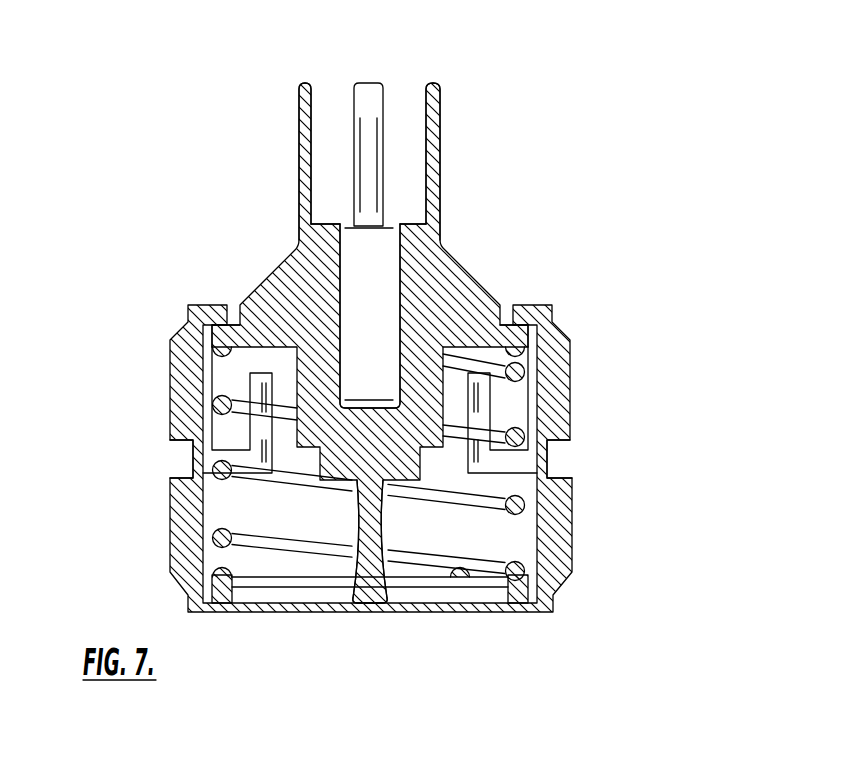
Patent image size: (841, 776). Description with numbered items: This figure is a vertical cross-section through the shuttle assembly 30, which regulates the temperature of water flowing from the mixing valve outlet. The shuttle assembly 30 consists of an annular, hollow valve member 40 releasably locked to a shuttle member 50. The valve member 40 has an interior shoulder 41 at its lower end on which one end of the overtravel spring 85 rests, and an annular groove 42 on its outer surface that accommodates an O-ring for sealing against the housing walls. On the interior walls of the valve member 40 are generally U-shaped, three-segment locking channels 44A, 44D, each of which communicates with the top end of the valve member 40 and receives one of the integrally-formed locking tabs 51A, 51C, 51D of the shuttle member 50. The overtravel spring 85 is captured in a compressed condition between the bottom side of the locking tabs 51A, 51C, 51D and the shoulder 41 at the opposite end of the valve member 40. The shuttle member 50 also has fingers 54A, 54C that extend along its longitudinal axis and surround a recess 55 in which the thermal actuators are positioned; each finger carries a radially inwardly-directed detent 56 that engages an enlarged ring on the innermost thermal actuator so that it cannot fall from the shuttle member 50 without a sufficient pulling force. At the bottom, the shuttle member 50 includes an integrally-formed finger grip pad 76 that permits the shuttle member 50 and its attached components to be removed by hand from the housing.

The shuttle assembly 30 is at (693, 287).
The valve member 40 is at (548, 400).
The interior shoulder 41 is at (527, 575).
The annular groove 42 is at (562, 444).
The locking channel 44A is at (482, 398).
The locking channel 44D is at (252, 377).
The shuttle member 50 is at (465, 290).
The locking tab 51A is at (513, 330).
The locking tab 51C is at (232, 333).
The locking tab 51D is at (368, 98).
The finger 54A is at (437, 165).
The finger 54C is at (303, 162).
The recess 55 is at (338, 338).
The detent 56 is at (318, 105).
The finger grip pad 76 is at (371, 592).
The overtravel spring 85 is at (465, 496).